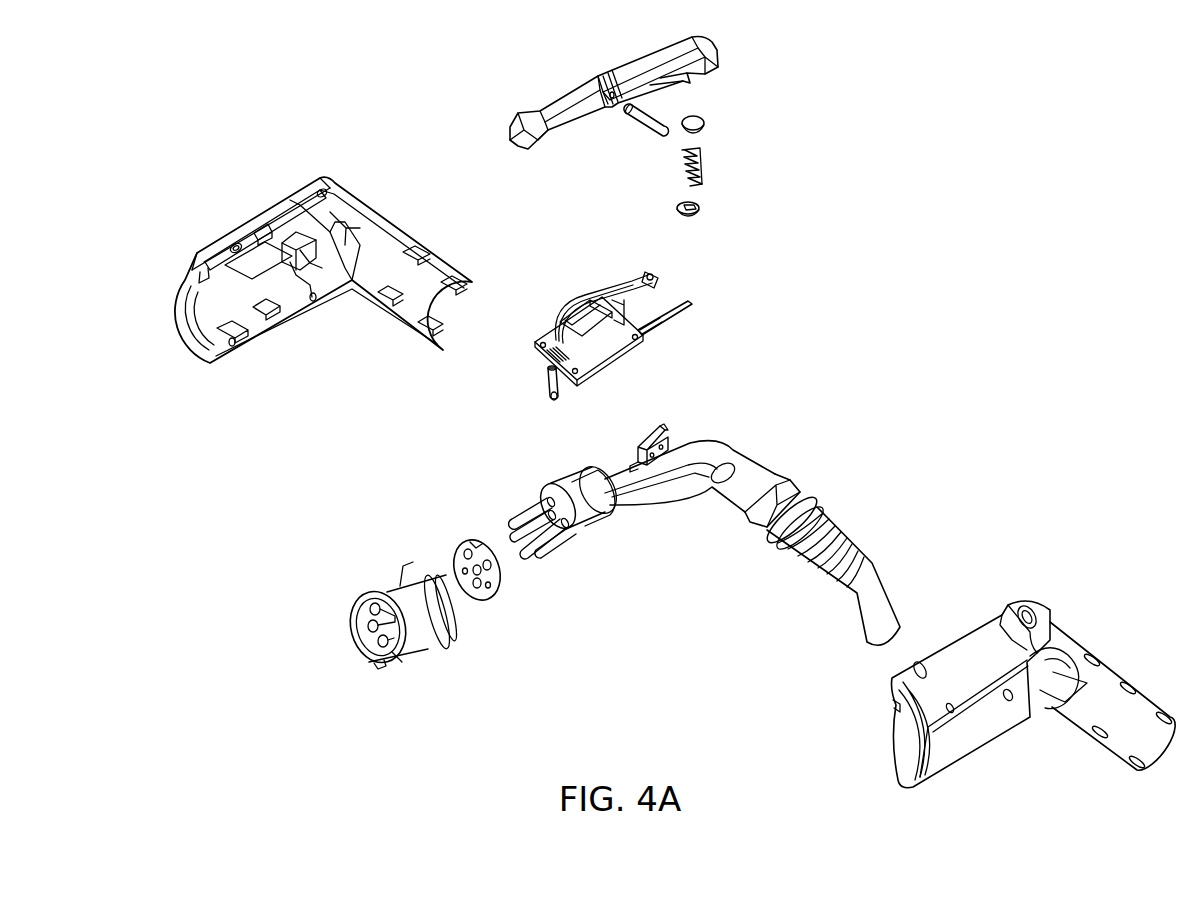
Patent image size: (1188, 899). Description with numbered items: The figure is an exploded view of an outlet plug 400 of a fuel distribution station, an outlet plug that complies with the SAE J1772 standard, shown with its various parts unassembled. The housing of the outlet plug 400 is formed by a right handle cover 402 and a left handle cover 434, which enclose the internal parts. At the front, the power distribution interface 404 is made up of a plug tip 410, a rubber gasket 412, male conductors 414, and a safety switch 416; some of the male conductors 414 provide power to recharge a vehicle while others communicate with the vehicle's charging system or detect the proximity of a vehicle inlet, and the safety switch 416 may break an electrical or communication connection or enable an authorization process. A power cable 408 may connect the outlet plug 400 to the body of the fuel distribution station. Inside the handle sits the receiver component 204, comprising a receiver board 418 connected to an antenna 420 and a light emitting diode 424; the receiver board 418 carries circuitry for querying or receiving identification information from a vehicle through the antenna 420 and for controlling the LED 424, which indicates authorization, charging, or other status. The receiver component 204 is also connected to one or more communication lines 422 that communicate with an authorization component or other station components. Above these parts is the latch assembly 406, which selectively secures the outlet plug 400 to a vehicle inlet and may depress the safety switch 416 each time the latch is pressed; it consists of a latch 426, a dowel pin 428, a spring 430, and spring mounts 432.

The outlet plug 400 is at (963, 193).
The right handle cover 402 is at (241, 222).
The power distribution interface 404 is at (394, 690).
The latch assembly 406 is at (754, 37).
The receiver component 204 is at (706, 263).
The power cable 408 is at (890, 582).
The plug tip 410 is at (375, 590).
The rubber gasket 412 is at (465, 540).
The male conductors 414 is at (523, 510).
The safety switch 416 is at (650, 430).
The receiver board 418 is at (610, 355).
The antenna 420 is at (548, 406).
The communication lines 422 is at (688, 314).
The light emitting diode (LED) 424 is at (648, 272).
The latch 426 is at (600, 72).
The dowel pin 428 is at (644, 122).
The spring 430 is at (680, 167).
The spring mounts 432 is at (708, 129).
The left handle cover 434 is at (1050, 605).